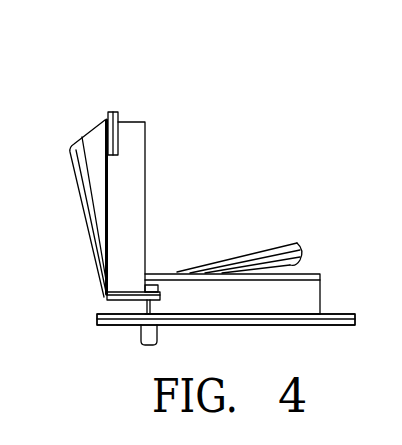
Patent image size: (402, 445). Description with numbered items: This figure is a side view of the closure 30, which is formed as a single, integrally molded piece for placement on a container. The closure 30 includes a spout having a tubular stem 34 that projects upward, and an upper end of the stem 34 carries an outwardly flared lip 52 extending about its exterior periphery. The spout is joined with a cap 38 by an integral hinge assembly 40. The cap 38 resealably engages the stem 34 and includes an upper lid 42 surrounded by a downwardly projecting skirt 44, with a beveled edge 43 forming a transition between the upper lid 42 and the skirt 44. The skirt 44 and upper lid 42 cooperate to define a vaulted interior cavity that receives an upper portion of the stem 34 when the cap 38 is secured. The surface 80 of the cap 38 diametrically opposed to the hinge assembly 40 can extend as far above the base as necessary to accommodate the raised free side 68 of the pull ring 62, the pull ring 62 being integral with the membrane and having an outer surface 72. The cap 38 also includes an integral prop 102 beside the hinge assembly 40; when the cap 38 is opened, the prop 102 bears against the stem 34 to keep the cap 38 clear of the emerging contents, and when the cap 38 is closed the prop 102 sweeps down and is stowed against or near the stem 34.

The closure 30 is at (233, 101).
The cap 38 is at (84, 85).
The surface 80 is at (96, 125).
The beveled edge 43 is at (85, 137).
The upper lid 42 is at (78, 182).
The skirt 44 is at (133, 211).
The prop 102 is at (147, 272).
The hinge assembly 40 is at (146, 302).
The outwardly flared lip 52 is at (322, 276).
The stem 34 is at (322, 300).
The pull ring 62 is at (298, 244).
The free side 68 is at (303, 250).
The outer surface 72 is at (303, 262).